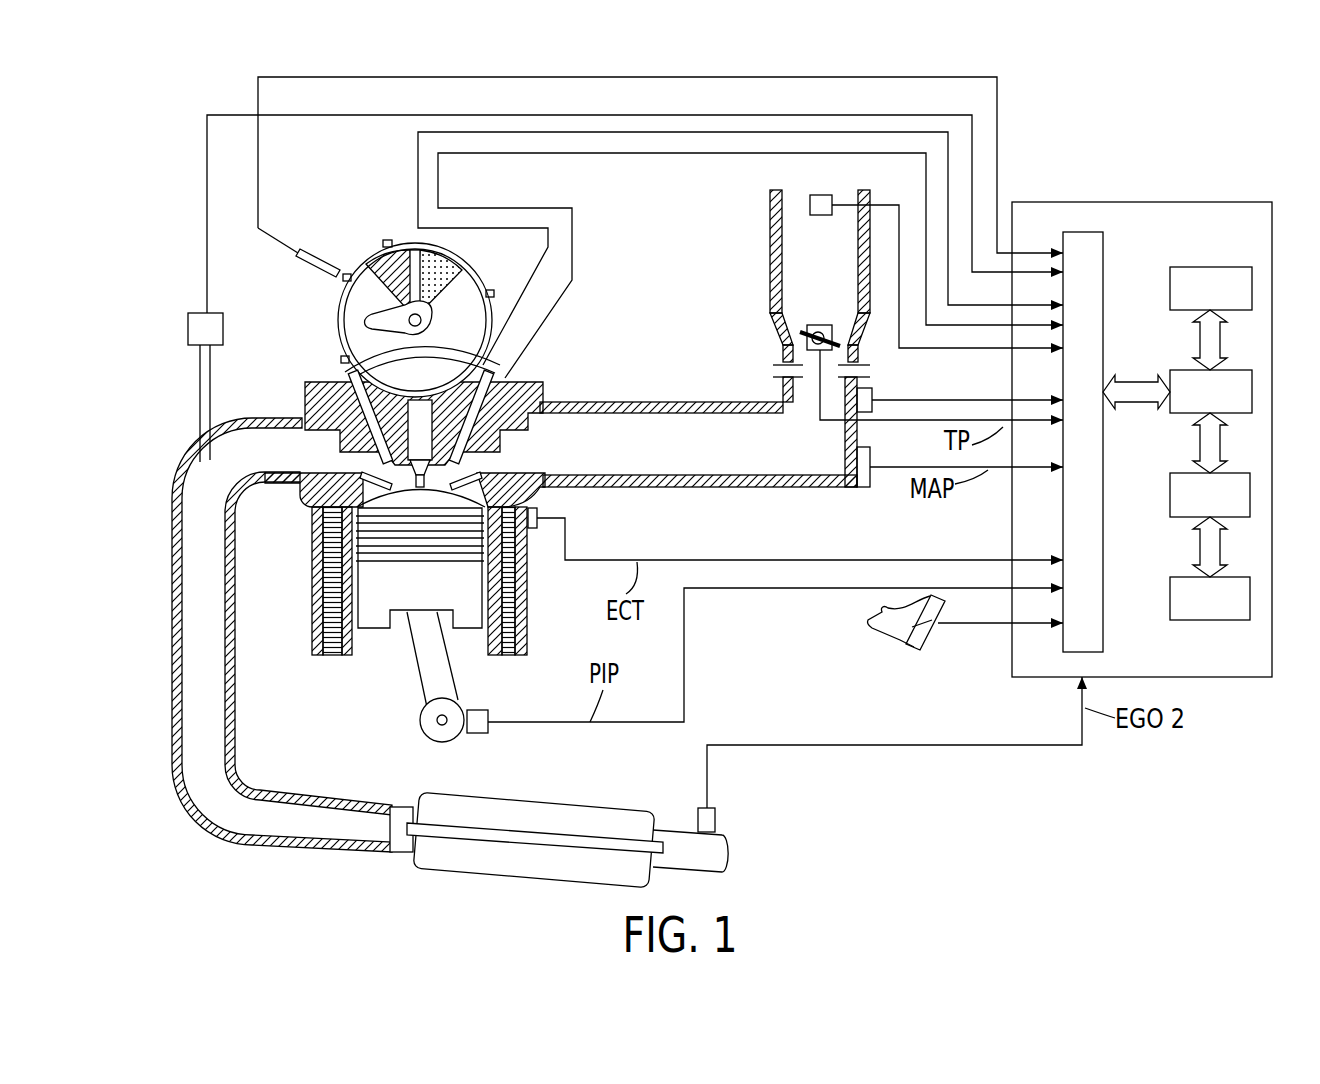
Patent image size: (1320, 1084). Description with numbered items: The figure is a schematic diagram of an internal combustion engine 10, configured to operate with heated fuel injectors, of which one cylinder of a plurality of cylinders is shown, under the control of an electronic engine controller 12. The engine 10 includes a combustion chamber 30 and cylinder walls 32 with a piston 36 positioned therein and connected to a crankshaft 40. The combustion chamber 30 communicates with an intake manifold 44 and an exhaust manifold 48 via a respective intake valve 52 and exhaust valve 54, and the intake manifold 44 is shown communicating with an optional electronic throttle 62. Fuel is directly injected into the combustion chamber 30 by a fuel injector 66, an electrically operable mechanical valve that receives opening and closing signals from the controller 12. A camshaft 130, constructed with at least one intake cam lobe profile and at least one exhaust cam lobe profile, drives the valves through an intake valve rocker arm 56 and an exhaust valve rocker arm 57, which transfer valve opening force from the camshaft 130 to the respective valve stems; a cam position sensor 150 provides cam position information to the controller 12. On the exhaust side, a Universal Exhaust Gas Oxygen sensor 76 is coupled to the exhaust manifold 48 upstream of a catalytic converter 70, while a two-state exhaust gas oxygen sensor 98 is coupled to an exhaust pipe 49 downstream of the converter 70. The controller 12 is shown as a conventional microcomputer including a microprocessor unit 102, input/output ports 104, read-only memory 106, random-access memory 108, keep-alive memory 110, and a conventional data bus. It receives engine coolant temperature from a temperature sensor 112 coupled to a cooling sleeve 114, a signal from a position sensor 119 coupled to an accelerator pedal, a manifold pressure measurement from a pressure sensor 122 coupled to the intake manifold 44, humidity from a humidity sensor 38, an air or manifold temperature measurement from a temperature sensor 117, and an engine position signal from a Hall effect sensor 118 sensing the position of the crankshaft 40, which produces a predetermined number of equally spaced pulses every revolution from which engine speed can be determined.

The internal combustion engine 10 is at (540, 320).
The electronic engine controller 12 is at (1142, 406).
The combustion chamber 30 is at (418, 493).
The cylinder walls 32 is at (348, 655).
The piston 36 is at (427, 595).
The humidity sensor 38 is at (810, 200).
The crankshaft 40 is at (420, 722).
The intake manifold 44 is at (745, 460).
The exhaust manifold 48 is at (197, 490).
The exhaust pipe 49 is at (700, 860).
The intake valve 52 is at (500, 374).
The exhaust valve 54 is at (352, 373).
The intake valve rocker arm 56 is at (492, 360).
The exhaust valve rocker arm 57 is at (350, 345).
The electronic throttle 62 is at (800, 318).
The fuel injector 66 is at (348, 507).
The catalytic converter 70 is at (512, 792).
The Universal Exhaust Gas Oxygen (UEGO) sensor 76 is at (188, 330).
The two-state exhaust gas oxygen sensor 98 is at (697, 804).
The microprocessor unit 102 is at (1170, 382).
The input/output ports 104 is at (1105, 262).
The read-only memory 106 is at (1210, 268).
The random-access memory 108 is at (1170, 475).
The keep-alive memory 110 is at (1170, 580).
The temperature sensor 112 is at (540, 508).
The cooling sleeve 114 is at (318, 662).
The temperature sensor 117 is at (878, 395).
The Hall effect sensor 118 is at (486, 708).
The position sensor 119 is at (943, 638).
The pressure sensor 122 is at (872, 457).
The camshaft 130 is at (368, 320).
The cam position sensor 150 is at (292, 263).